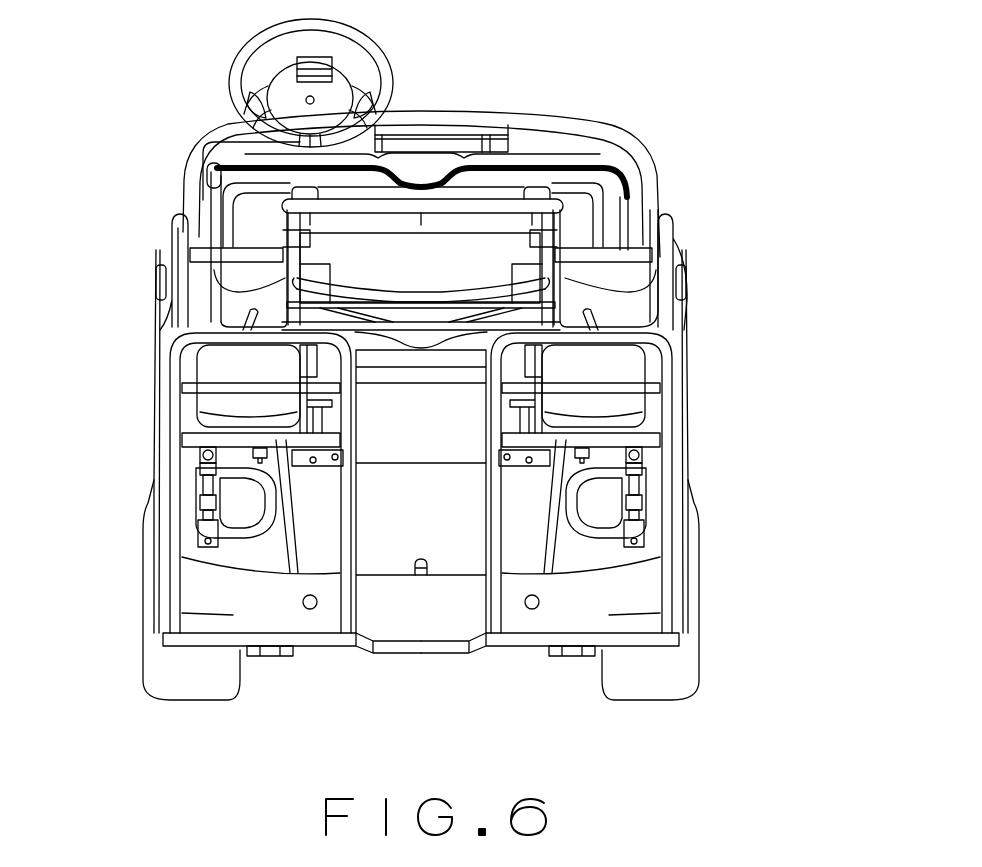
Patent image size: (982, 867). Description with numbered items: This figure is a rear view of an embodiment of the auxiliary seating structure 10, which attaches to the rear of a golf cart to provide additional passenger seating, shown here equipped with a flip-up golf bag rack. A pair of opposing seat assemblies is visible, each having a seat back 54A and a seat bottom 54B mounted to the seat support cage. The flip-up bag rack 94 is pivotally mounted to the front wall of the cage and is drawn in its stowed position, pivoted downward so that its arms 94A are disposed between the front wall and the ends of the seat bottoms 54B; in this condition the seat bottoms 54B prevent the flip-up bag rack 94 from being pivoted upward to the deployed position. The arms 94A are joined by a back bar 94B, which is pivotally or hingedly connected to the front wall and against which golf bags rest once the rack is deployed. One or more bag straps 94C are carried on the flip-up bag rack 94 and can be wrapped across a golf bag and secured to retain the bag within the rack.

The auxiliary seating system 10 is at (166, 122).
The seat back 54A is at (182, 243).
The seat bottom 54B is at (232, 367).
The flip-up bag rack 94 is at (557, 342).
The arms 94A is at (207, 310).
The back bar 94B is at (455, 323).
The bag strap 94C is at (487, 333).